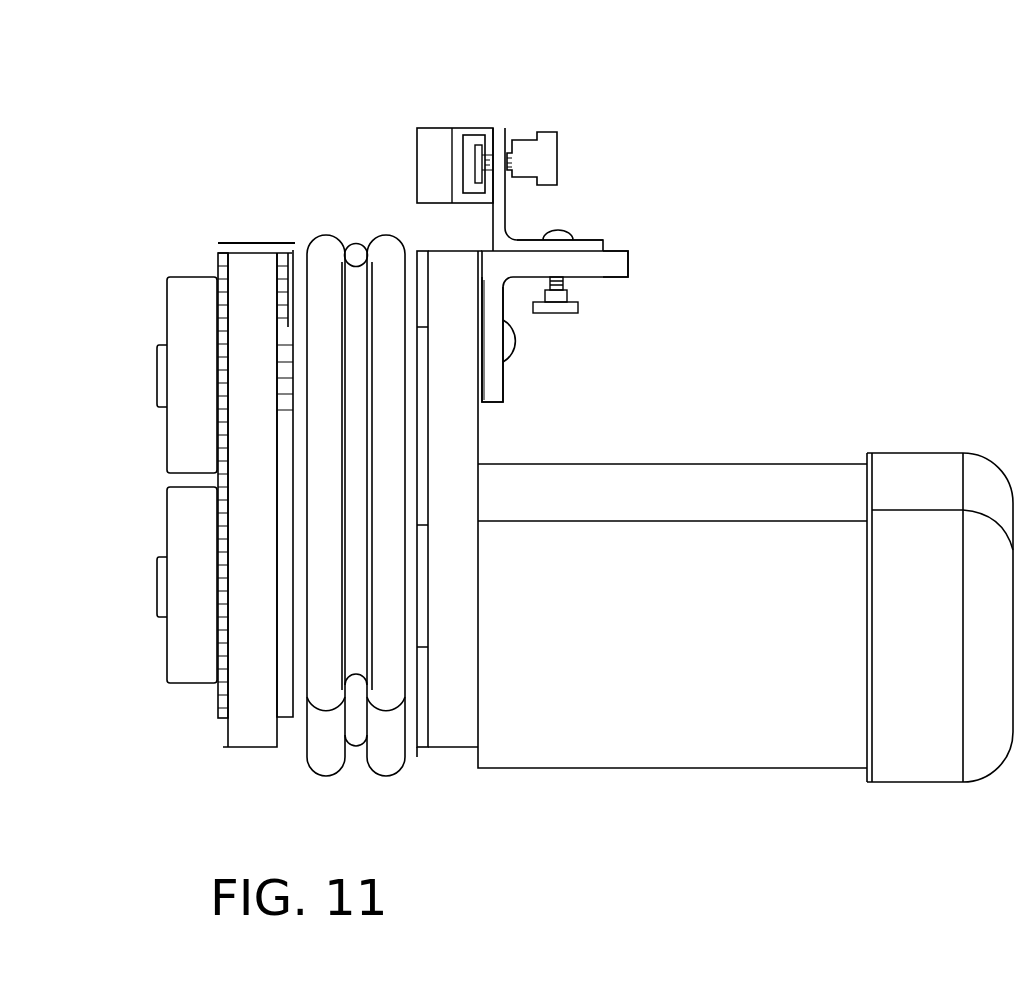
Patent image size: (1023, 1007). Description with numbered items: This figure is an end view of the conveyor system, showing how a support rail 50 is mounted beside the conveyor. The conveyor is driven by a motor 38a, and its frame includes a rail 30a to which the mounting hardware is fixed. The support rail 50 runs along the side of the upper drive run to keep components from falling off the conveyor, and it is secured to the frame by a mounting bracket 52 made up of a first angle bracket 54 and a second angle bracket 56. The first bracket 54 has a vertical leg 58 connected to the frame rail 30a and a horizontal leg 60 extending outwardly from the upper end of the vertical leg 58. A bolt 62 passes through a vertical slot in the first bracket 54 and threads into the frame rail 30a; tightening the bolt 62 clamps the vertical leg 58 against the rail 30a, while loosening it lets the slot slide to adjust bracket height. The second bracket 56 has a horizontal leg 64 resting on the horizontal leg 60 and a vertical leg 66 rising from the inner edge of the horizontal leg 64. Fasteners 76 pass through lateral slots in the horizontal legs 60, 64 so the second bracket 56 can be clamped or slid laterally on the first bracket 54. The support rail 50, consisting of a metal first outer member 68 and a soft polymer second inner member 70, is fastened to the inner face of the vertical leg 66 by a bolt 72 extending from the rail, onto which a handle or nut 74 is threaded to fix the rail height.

The rail 30a is at (452, 742).
The motor 38a is at (713, 745).
The support rail 50 is at (468, 116).
The mounting bracket 52 is at (592, 295).
The first angle bracket 54 is at (498, 390).
The second angle bracket 56 is at (493, 230).
The vertical leg 58 is at (498, 368).
The horizontal leg 60 is at (617, 273).
The bolt 62 is at (513, 342).
The horizontal leg 64 is at (588, 243).
The vertical leg 66 is at (502, 213).
The first outer member 68 is at (472, 133).
The second inner member 70 is at (427, 142).
The bolt 72 is at (483, 163).
The handle or nut 74 is at (553, 147).
The fasteners 76 is at (562, 283).